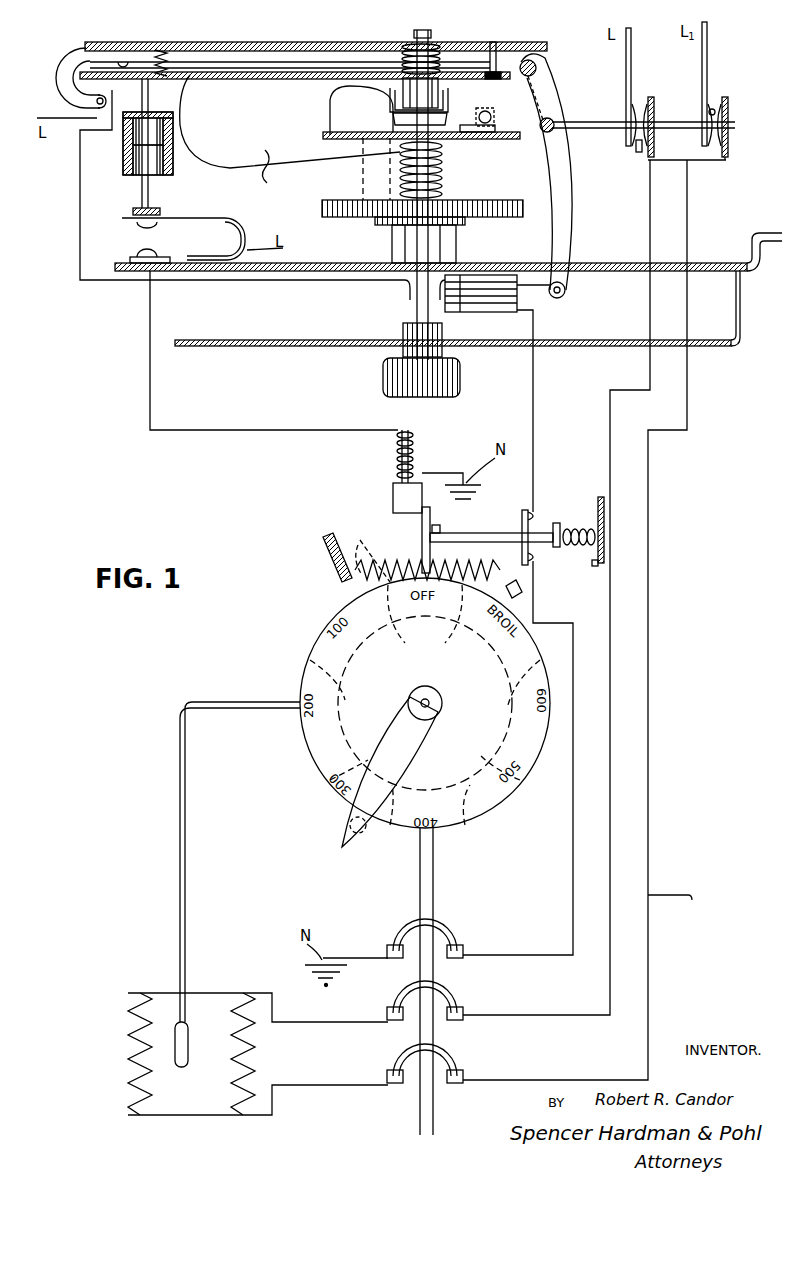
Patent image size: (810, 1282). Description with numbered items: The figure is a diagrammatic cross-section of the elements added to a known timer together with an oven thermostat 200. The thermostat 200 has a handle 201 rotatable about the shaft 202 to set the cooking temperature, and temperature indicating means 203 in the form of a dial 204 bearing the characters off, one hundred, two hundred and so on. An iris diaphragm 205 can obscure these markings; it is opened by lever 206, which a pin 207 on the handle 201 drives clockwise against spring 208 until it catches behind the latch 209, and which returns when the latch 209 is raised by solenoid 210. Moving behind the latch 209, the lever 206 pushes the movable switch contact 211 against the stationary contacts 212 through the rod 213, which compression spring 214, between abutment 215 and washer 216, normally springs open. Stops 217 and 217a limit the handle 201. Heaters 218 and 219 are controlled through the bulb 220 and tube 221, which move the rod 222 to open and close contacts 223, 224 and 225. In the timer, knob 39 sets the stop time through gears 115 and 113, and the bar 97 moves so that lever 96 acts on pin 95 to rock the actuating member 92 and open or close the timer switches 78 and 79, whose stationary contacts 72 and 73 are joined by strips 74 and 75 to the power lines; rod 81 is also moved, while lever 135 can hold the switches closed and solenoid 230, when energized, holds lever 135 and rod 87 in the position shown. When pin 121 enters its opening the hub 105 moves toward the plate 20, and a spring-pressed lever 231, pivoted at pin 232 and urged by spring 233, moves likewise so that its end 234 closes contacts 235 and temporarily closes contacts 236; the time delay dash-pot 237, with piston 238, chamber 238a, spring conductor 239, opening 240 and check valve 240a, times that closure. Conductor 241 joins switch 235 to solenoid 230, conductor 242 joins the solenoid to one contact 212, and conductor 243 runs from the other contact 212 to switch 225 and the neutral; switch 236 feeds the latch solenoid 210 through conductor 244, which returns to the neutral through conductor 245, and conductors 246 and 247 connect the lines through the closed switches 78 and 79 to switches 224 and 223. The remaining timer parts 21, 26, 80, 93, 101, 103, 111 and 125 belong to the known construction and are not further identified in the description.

The plate 20 is at (330, 263).
The top plate 21 is at (290, 42).
The intermediate plate 26 is at (284, 341).
The stop knob 39 is at (383, 378).
The stationary contact 72 is at (637, 150).
The stationary contact 73 is at (712, 108).
The strip 74 is at (632, 52).
The strip 75 is at (708, 45).
The timer controlled switch 78 is at (645, 102).
The timer controlled switch 79 is at (728, 100).
The terminal 80 is at (652, 158).
The rod 81 is at (730, 152).
The rod 87 is at (580, 122).
The actuating member 92 is at (548, 95).
The pivot 93 is at (536, 66).
The pin 95 is at (492, 112).
The lever 96 is at (290, 136).
The bar 97 is at (450, 105).
The shaft 101 is at (420, 34).
The spring 103 is at (440, 55).
The hub 105 is at (412, 90).
The cam plate 111 is at (325, 136).
The gear 113 is at (322, 208).
The gear 115 is at (466, 223).
The pin 121 is at (375, 176).
The spring 125 is at (446, 172).
The lever 135 is at (566, 250).
The thermostat 200 is at (300, 780).
The handle 201 is at (414, 755).
The shaft 202 is at (430, 703).
The temperature indicating means 203 is at (322, 622).
The dial 204 is at (302, 668).
The iris diaphragm 205 is at (350, 672).
The lever 206 is at (422, 525).
The pin 207 is at (362, 840).
The spring 208 is at (348, 560).
The latch 209 is at (395, 496).
The latch solenoid 210 is at (412, 440).
The movable switch contact 211 is at (524, 508).
The stationary contacts 212 is at (537, 512).
The rod 213 is at (506, 533).
The compression spring 214 is at (582, 528).
The abutment 215 is at (606, 545).
The washer 216 is at (600, 566).
The stop 217 is at (524, 594).
The stop 217a is at (441, 528).
The heater 218 is at (128, 1070).
The heater 219 is at (255, 1053).
The thermostatic liquid-containing bulb 220 is at (186, 1052).
The tube 221 is at (186, 836).
The rod 222 is at (432, 892).
The contact 223 is at (450, 1055).
The switch 224 is at (450, 990).
The switch 225 is at (460, 938).
The timer solenoid 230 is at (462, 312).
The spring-pressed lever 231 is at (196, 72).
The pin 232 is at (498, 50).
The spring 233 is at (170, 55).
The end of rod 234 is at (76, 68).
The contacts 235 is at (95, 97).
The contacts 236 is at (157, 228).
The time delay dash-pot 237 is at (123, 145).
The piston 238 is at (140, 165).
The chamber 238a is at (172, 150).
The spring conductor 239 is at (165, 216).
The opening 240 is at (142, 112).
The check valve 240a is at (165, 135).
The conductor 241 is at (108, 288).
The conductor 242 is at (534, 410).
The conductor 243 is at (575, 950).
The conductor 244 is at (226, 431).
The conductor 245 is at (450, 473).
The conductor 246 is at (613, 1012).
The conductor 247 is at (656, 898).